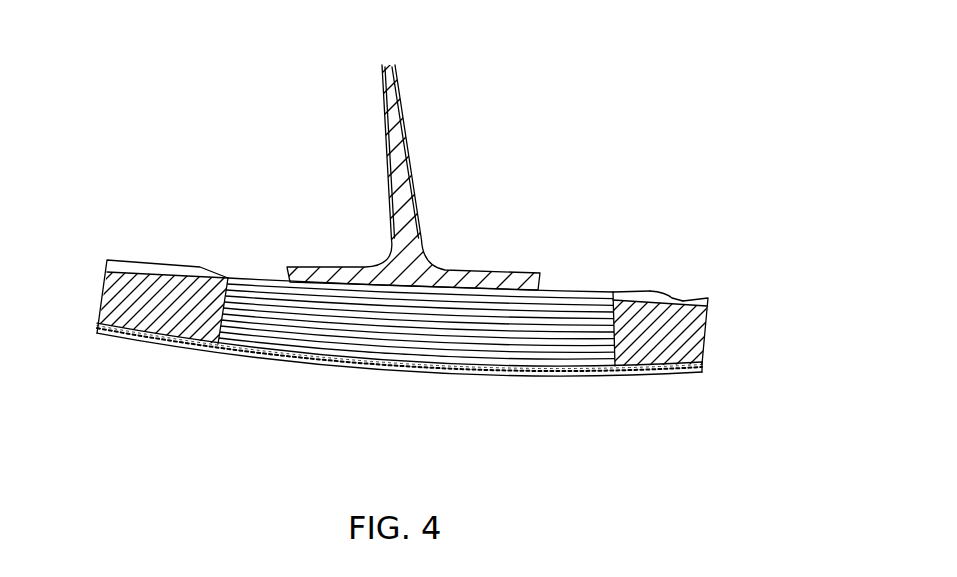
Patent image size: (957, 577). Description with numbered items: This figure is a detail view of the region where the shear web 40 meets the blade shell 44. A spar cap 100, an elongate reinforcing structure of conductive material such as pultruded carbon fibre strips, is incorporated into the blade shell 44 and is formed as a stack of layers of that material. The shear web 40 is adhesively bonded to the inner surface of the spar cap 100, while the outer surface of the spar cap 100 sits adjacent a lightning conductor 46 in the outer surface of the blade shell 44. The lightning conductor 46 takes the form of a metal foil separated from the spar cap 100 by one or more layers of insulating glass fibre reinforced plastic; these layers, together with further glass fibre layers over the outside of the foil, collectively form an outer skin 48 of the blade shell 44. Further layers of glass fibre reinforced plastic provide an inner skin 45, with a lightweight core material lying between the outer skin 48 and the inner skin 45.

The shear web 40 is at (405, 140).
The blade shell 44 is at (162, 290).
The inner skin 45 is at (690, 300).
The lightning conductor 46 is at (568, 378).
The outer skin 48 is at (702, 363).
The spar cap 100 is at (593, 295).